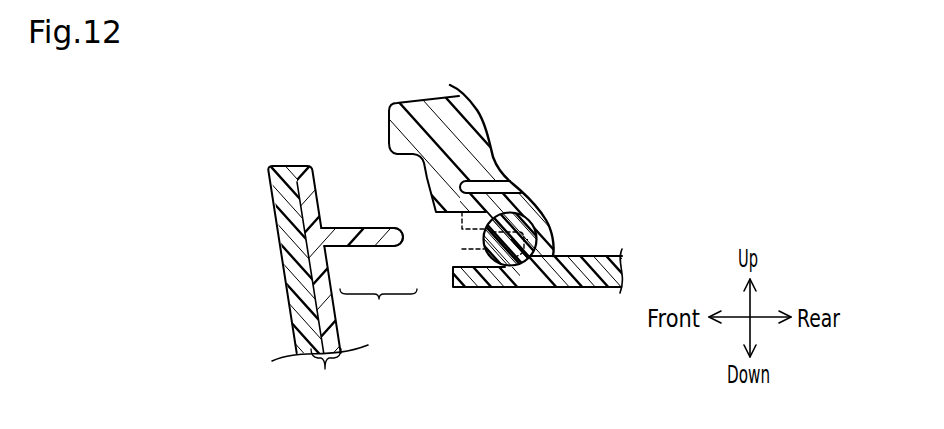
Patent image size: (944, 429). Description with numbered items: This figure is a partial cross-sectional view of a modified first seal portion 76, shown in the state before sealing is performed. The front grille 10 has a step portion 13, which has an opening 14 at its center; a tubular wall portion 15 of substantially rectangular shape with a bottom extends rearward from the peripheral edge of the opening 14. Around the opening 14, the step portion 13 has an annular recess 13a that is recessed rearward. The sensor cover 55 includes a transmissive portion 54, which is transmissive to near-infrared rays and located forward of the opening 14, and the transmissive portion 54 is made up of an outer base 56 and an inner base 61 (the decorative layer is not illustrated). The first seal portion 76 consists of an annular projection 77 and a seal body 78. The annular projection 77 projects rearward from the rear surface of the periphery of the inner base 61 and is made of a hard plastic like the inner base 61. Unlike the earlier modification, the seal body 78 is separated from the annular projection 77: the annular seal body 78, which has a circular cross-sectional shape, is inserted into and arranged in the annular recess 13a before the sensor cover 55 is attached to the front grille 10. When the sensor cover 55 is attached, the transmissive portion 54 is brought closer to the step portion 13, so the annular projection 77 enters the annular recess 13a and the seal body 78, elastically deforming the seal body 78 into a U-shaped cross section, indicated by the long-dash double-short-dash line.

The front grille 10 is at (417, 108).
The step portion 13 is at (407, 157).
The annular recess 13a is at (520, 268).
The opening 14 is at (468, 290).
The tubular wall portion 15 is at (597, 266).
The transmissive portion 54 is at (325, 376).
The sensor cover 55 is at (332, 374).
The outer base 56 is at (292, 263).
The inner base 61 is at (321, 198).
The first seal portion 76 is at (378, 310).
The annular projection 77 is at (360, 242).
The seal body 78 is at (462, 249).